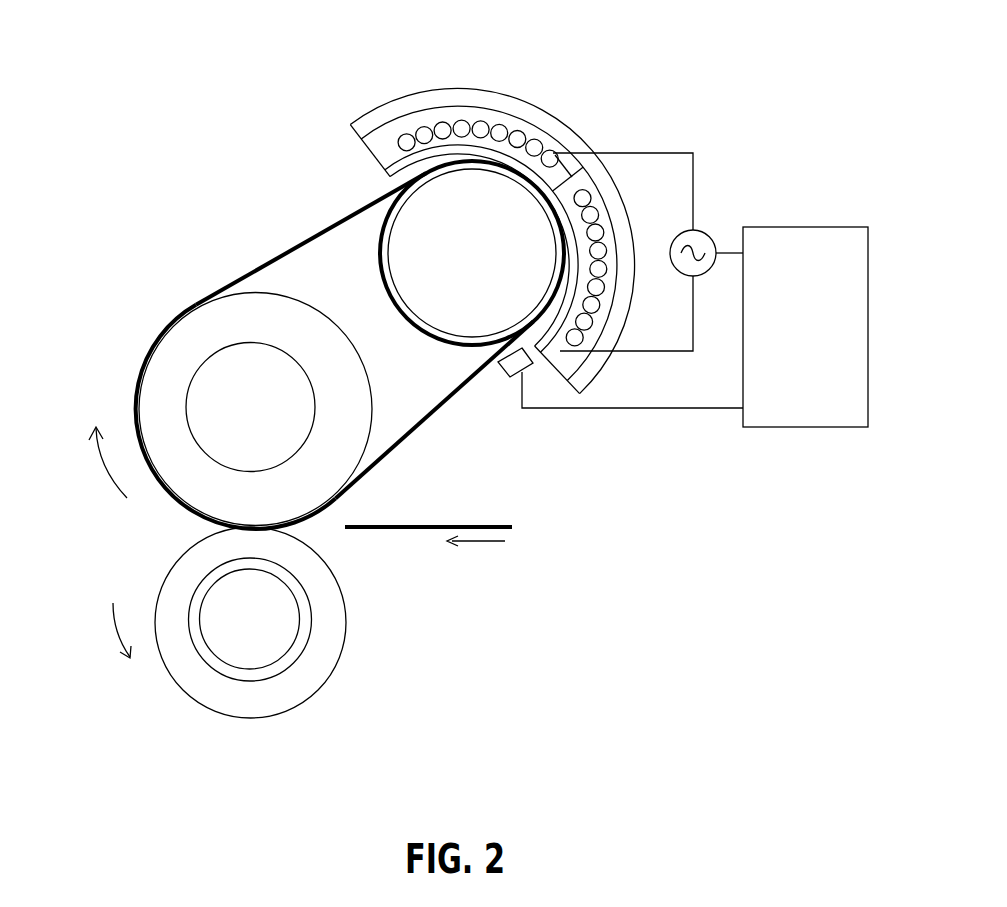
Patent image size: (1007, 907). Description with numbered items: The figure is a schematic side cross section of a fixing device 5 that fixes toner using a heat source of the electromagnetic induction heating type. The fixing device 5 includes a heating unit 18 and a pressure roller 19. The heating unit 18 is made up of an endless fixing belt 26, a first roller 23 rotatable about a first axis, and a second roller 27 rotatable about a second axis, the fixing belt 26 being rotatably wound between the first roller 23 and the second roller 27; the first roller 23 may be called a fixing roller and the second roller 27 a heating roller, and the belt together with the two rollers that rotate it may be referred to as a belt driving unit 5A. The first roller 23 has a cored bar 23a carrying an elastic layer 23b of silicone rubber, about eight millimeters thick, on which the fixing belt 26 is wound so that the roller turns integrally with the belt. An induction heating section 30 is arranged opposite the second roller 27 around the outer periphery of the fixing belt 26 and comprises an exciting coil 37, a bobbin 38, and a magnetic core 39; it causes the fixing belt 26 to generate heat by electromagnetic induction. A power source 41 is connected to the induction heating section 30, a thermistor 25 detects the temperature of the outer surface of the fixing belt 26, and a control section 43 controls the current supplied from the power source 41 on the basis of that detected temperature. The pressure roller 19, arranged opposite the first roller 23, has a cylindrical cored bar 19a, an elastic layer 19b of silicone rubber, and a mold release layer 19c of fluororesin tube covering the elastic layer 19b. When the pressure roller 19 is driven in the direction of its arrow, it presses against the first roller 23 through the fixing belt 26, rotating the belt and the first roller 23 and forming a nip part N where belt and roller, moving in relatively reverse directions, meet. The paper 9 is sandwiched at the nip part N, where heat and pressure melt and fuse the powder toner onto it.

The fixing device 5 is at (175, 108).
The belt driving unit 5A is at (252, 170).
The paper 9 is at (497, 521).
The heating unit 18 is at (153, 318).
The pressure roller 19 is at (452, 578).
The cored bar 19a is at (286, 603).
The elastic layer 19b is at (305, 633).
The mold release layer 19c is at (312, 676).
The first roller 23 is at (55, 326).
The cored bar 23a is at (210, 380).
The elastic layer 23b is at (162, 398).
The thermistor 25 is at (502, 377).
The fixing belt 26 is at (273, 260).
The second roller 27 is at (382, 233).
The induction heating section 30 is at (472, 75).
The exciting coil 37 is at (520, 138).
The bobbin 38 is at (435, 132).
The magnetic core 39 is at (375, 122).
The power source 41 is at (697, 228).
The control section 43 is at (756, 227).
The nip part N is at (246, 528).